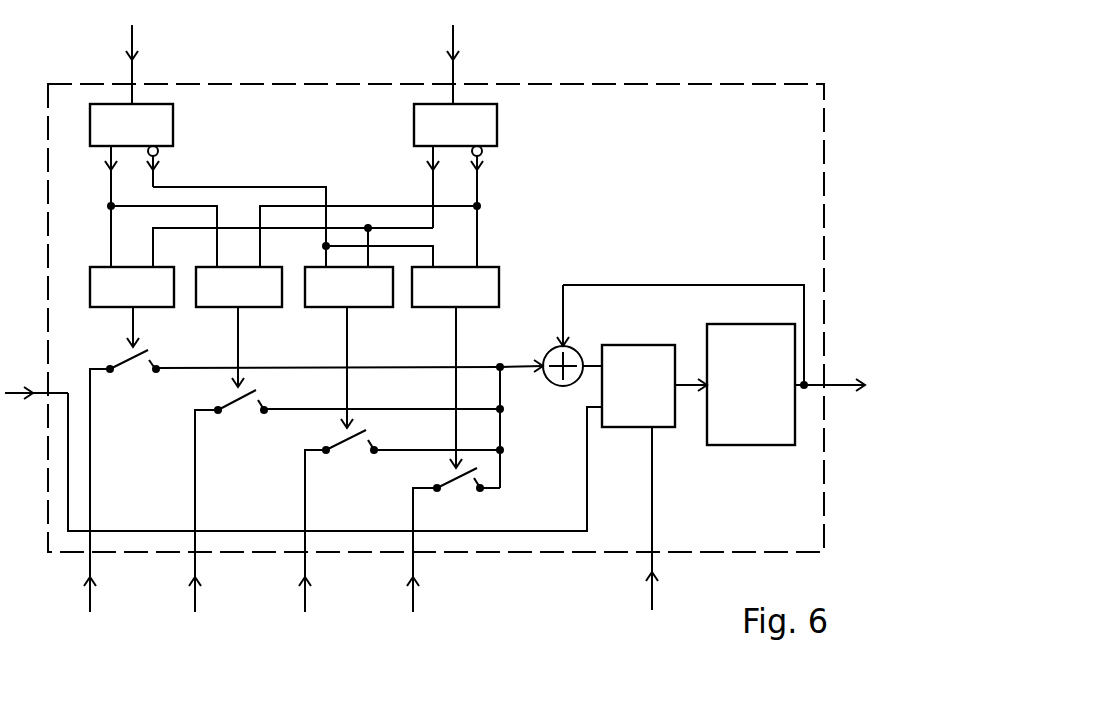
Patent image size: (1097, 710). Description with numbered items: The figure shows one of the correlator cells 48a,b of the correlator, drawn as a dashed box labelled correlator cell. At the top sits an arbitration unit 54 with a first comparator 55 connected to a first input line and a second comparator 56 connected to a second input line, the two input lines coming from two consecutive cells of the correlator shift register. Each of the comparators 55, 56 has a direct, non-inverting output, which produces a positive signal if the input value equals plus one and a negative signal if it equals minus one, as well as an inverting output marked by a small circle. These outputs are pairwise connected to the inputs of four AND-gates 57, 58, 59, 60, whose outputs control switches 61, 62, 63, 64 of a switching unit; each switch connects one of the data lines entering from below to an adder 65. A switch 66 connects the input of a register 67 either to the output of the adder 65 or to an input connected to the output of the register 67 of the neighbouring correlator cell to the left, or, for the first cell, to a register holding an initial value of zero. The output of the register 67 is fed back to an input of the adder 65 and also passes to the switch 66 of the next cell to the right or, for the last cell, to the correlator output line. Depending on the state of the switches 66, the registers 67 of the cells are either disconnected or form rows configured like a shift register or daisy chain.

The arbitration unit 54 is at (547, 193).
The first comparator 55 is at (165, 132).
The second comparator 56 is at (490, 132).
The AND-gate 57 is at (105, 298).
The AND-gate 58 is at (213, 298).
The AND-gate 59 is at (320, 298).
The AND-gate 60 is at (427, 298).
The switch 61 is at (136, 371).
The switch 62 is at (244, 412).
The switch 63 is at (354, 452).
The switch 64 is at (466, 490).
The adder 65 is at (555, 379).
The switch 66 is at (642, 421).
The register 67 is at (735, 436).
The correlator cells 48a,b is at (130, 566).